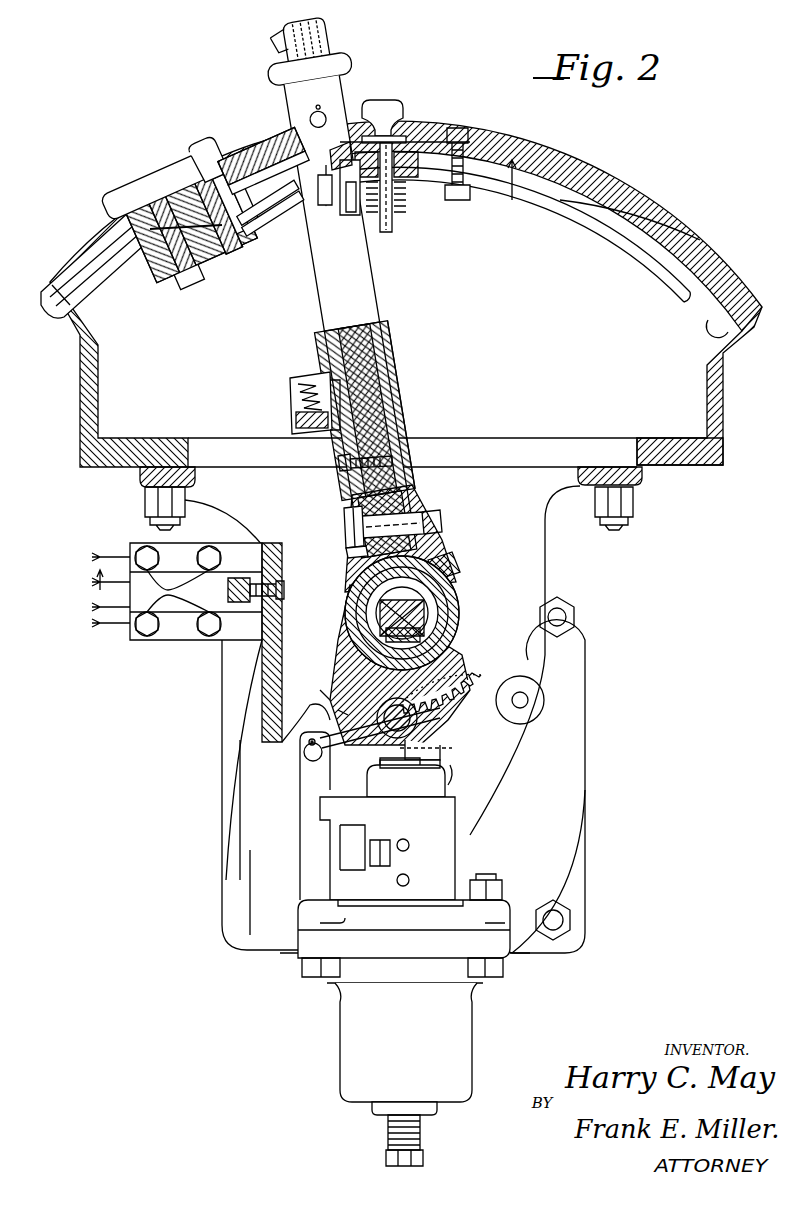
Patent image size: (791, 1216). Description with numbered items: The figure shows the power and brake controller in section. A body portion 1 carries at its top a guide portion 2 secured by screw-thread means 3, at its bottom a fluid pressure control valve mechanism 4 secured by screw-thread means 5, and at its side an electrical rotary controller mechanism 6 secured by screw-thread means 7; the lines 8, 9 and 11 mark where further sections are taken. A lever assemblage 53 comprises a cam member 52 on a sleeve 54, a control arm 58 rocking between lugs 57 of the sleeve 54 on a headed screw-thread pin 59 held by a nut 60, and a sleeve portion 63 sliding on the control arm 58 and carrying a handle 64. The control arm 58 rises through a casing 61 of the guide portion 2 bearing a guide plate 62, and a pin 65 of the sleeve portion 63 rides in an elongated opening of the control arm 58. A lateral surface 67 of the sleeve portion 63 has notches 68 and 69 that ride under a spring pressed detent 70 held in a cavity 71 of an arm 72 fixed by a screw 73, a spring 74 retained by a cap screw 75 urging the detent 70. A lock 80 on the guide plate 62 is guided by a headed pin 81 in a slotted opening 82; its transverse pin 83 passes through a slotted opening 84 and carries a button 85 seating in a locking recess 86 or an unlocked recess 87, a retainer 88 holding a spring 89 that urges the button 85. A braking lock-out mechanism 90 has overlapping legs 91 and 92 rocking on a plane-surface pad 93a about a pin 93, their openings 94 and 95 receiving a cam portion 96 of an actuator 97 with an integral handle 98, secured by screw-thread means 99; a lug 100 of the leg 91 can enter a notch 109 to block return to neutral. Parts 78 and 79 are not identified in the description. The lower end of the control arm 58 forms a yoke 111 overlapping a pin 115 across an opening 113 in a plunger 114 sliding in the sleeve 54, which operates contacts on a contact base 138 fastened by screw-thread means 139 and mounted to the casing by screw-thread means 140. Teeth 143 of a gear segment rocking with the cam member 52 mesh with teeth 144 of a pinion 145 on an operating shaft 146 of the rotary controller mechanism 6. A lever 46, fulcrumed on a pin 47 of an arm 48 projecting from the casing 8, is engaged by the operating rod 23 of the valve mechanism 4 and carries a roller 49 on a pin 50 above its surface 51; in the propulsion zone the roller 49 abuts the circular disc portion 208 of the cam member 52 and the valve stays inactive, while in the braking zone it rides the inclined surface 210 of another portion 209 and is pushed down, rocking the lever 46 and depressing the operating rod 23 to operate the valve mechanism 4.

The bracket or body portion 1 is at (556, 552).
The guide portion 2 is at (732, 408).
The screw-thread means 3 is at (140, 500).
The fluid pressure control valve mechanism 4 is at (330, 1047).
The screw-thread means 5 is at (392, 855).
The electrical rotary controller mechanism 6 is at (597, 766).
The screw-thread means 7 is at (567, 613).
The casing 8 is at (102, 586).
The section line 9— 9 is at (342, 150).
The section line 11— 11 is at (512, 180).
The operating rod 23 is at (406, 777).
The lever 46 is at (312, 740).
The pin 47 is at (322, 756).
The arm 48 is at (305, 778).
The roller 49 is at (417, 722).
The pin 50 is at (412, 716).
The surface 51 is at (375, 730).
The cam member 52 is at (345, 660).
The lever assemblage 53 is at (362, 324).
The cylindrical portion or sleeve 54 is at (342, 600).
The lugs 57 is at (350, 503).
The control arm 58 is at (428, 485).
The headed screw-thread pin 59 is at (345, 528).
The nut 60 is at (440, 516).
The casing 61 is at (675, 450).
The guide plate 62 is at (698, 240).
The sleeve portion 63 is at (372, 282).
The handle 64 is at (334, 34).
The pin 65 is at (302, 118).
The lateral surface 67 is at (310, 352).
The notch 68 is at (345, 388).
The notch 69 is at (443, 397).
The spring pressed detent 70 is at (312, 378).
The cavity 71 is at (336, 425).
The arm 72 is at (312, 458).
The screw 73 is at (348, 470).
The spring 74 is at (296, 420).
The cap screw 75 is at (296, 392).
The pivot block 78 is at (285, 152).
The plate 79 is at (348, 195).
The lock 80 is at (412, 185).
The headed pin 81 is at (468, 136).
The slotted opening 82 is at (460, 200).
The pin 83 is at (390, 150).
The slotted opening 84 is at (420, 145).
The button 85 is at (390, 108).
The recess 86 is at (380, 112).
The recess 87 is at (420, 135).
The retainer 88 is at (394, 225).
The spring 89 is at (408, 200).
The braking lock-out mechanism 90 is at (170, 176).
The leg 91 is at (209, 241).
The leg 92 is at (150, 229).
The pin 93 is at (207, 293).
The plane-surface pad 93a is at (241, 122).
The opening 94 is at (289, 201).
The opening 95 is at (285, 209).
The cam portion 96 is at (268, 210).
The actuator 97 is at (222, 124).
The handle 98 is at (148, 185).
The screw-thread means 99 is at (244, 224).
The lug 100 is at (287, 196).
The notch 109 is at (358, 205).
The yoke 111 is at (426, 612).
The opening 113 is at (430, 636).
The plunger 114 is at (380, 632).
The pin 115 is at (364, 620).
The contact base 138 is at (262, 560).
The screw-thread means 139 is at (178, 591).
The screw-thread means 140 is at (280, 590).
The teeth 143 is at (462, 682).
The teeth 144 is at (442, 765).
The pinion 145 is at (442, 750).
The operating shaft 146 is at (448, 785).
The portion of cam member 208 is at (500, 690).
The portion of cam member 209 is at (350, 695).
The cam or inclined surface 210 is at (356, 710).